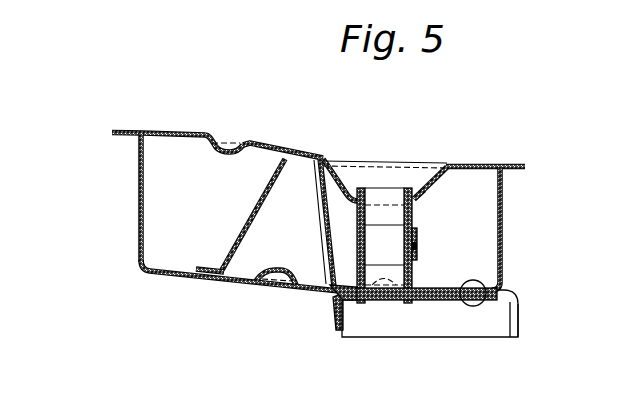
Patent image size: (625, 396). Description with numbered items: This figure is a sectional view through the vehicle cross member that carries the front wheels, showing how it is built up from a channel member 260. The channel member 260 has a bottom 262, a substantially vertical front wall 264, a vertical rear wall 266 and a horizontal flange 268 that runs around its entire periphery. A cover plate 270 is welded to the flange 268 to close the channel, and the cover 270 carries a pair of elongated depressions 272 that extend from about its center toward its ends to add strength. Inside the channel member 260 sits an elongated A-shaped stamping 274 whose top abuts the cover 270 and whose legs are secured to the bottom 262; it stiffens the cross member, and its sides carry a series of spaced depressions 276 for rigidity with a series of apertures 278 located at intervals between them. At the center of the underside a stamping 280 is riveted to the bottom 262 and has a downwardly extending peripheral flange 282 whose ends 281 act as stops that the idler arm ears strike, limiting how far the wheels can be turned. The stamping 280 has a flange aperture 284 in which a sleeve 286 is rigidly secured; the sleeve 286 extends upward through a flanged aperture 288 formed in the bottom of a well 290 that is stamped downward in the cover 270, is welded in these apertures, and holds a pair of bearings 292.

The channel member 260 is at (150, 270).
The bottom 262 is at (233, 282).
The front wall 264 is at (140, 196).
The rear wall 266 is at (503, 232).
The horizontal flange 268 is at (116, 136).
The cover plate 270 is at (192, 132).
The elongated depressions 272 is at (241, 146).
The A-shaped stamping 274 is at (221, 264).
The spaced depressions 276 is at (313, 188).
The apertures 278 is at (248, 217).
The stamping 280 is at (453, 303).
The ends 281 is at (514, 318).
The peripheral flange 282 is at (333, 298).
The flange aperture 284 is at (418, 287).
The sleeve 286 is at (330, 267).
The flanged aperture 288 is at (418, 199).
The well 290 is at (434, 184).
The bearings 292 is at (405, 198).